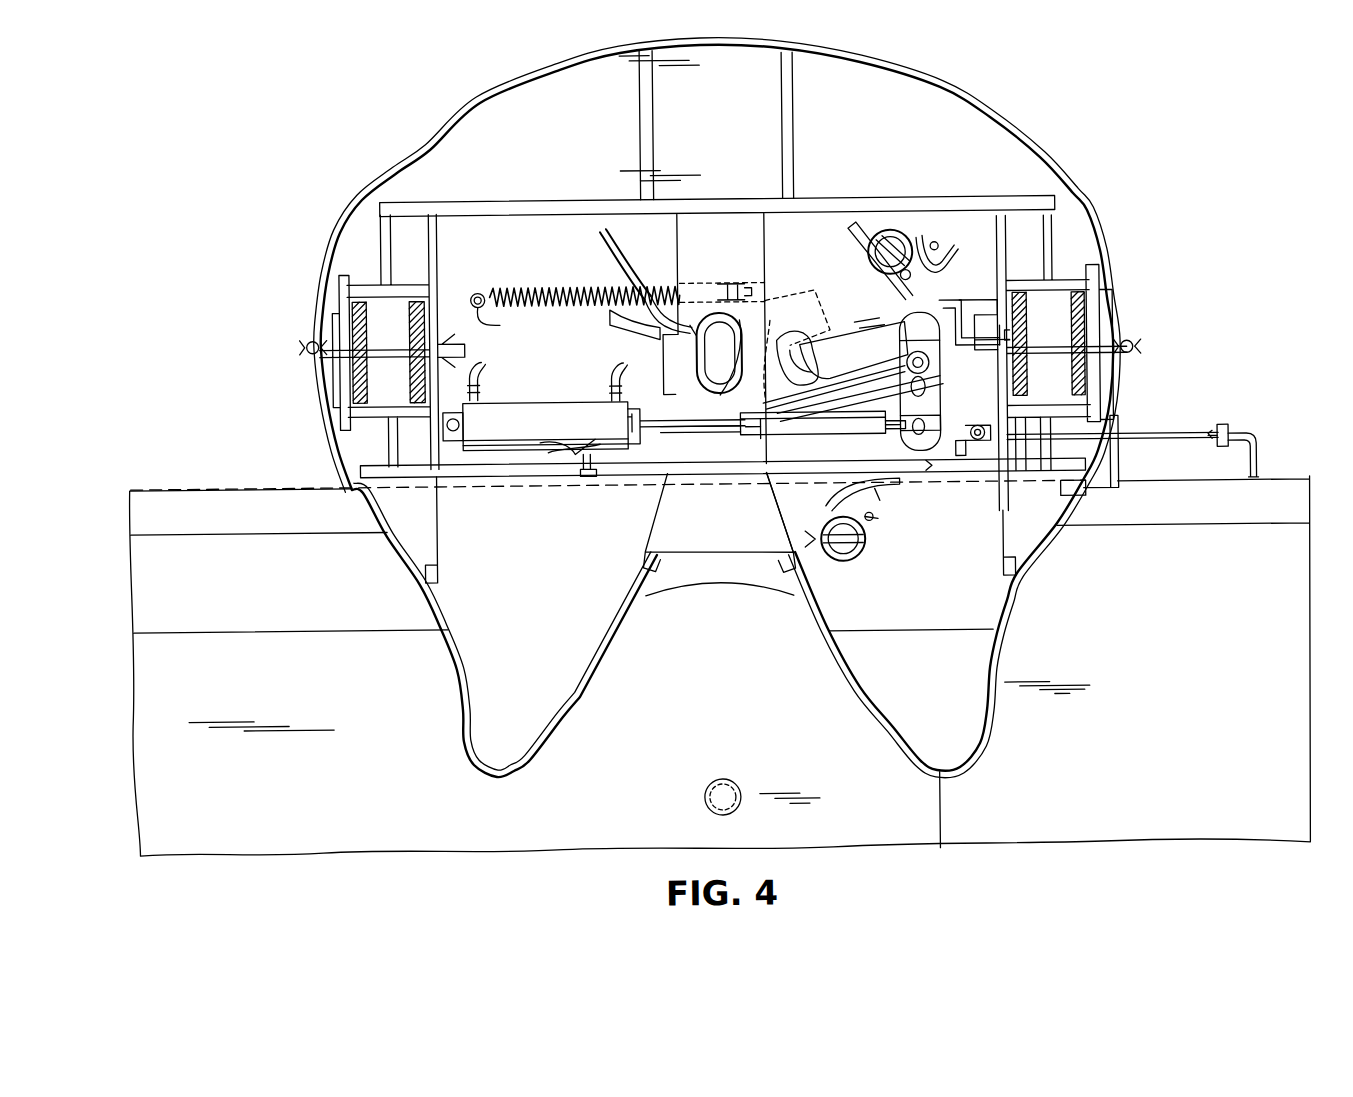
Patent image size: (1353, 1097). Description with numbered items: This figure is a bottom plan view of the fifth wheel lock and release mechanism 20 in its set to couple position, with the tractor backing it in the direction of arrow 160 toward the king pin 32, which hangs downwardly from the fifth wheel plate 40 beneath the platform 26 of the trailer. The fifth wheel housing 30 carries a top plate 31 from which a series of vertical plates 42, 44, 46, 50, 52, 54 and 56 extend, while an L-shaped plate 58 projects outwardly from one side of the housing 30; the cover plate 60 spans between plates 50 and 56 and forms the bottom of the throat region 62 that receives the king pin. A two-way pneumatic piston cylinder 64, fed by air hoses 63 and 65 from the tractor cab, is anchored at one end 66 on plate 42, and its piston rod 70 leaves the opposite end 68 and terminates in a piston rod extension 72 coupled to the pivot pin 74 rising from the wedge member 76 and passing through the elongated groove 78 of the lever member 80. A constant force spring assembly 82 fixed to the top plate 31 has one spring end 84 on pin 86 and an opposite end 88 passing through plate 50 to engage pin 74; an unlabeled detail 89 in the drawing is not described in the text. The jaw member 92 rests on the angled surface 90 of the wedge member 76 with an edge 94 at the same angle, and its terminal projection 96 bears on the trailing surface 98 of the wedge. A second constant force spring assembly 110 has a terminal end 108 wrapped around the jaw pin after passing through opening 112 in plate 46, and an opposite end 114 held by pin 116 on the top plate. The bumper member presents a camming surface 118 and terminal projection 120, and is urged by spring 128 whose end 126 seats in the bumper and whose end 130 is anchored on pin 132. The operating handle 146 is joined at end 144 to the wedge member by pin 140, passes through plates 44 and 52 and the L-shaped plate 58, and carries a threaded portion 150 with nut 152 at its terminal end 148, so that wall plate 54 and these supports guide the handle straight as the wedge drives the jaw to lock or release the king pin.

The lock and release mechanism 20 is at (1088, 196).
The platform 26 is at (274, 625).
The fifth wheel housing 30 is at (416, 139).
The top plate 31 is at (569, 156).
The king pin 32 is at (735, 788).
The fifth wheel plate 40 is at (942, 811).
The plate 42 is at (441, 233).
The plate 44 is at (1009, 263).
The plate 46 is at (977, 338).
The plate 50 is at (949, 465).
The plate 52 is at (1063, 418).
The wall plate 54 is at (776, 323).
The plate 56 is at (889, 230).
The L-shaped plate 58 is at (1121, 465).
The cover plate 60 is at (680, 243).
The throat region 62 is at (703, 365).
The air hose 63 is at (613, 369).
The two-way pneumatic piston cylinder 64 is at (518, 422).
The air hose 65 is at (471, 371).
The end 66 is at (455, 442).
The opposite end 68 is at (631, 409).
The piston rod 70 is at (695, 466).
The piston rod extension 72 is at (769, 472).
The pivot pin 74 is at (888, 439).
The wedge member 76 is at (840, 463).
The elongated groove 78 is at (949, 458).
The lever member 80 is at (937, 316).
The constant force spring assembly 82 is at (870, 567).
The spring end 84 is at (892, 486).
The pin 86 is at (878, 524).
The opposite end 88 is at (969, 324).
The pin 89 is at (926, 480).
The angled surface 90 is at (766, 450).
The jaw member 92 is at (846, 392).
The edge 94 is at (869, 394).
The terminal projection 96 is at (1025, 371).
The trailing surface 98 is at (987, 449).
The terminal end 108 is at (917, 352).
The constant force spring assembly 110 is at (855, 249).
The opening 112 is at (886, 322).
The opposite end 114 is at (960, 250).
The pin 116 is at (936, 244).
The camming surface 118 is at (800, 337).
The terminal projection 120 is at (718, 388).
The end 126 is at (730, 283).
The spring 128 is at (540, 284).
The end 130 is at (502, 323).
The pin 132 is at (480, 290).
The pin 140 is at (961, 461).
The end 144 is at (1077, 497).
The operating handle 146 is at (1137, 435).
The terminal end 148 is at (1261, 445).
The threaded portion 150 is at (1231, 439).
The nut 152 is at (1223, 429).
The arrow 160 is at (720, 528).